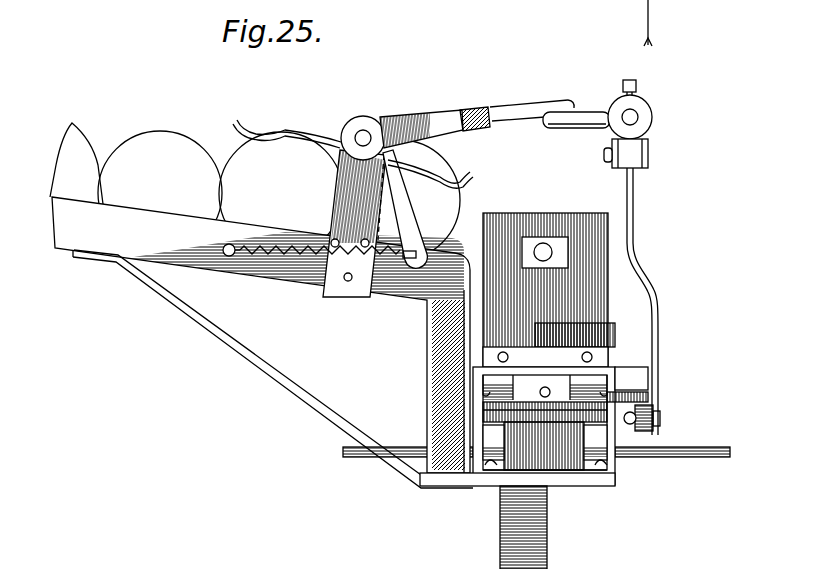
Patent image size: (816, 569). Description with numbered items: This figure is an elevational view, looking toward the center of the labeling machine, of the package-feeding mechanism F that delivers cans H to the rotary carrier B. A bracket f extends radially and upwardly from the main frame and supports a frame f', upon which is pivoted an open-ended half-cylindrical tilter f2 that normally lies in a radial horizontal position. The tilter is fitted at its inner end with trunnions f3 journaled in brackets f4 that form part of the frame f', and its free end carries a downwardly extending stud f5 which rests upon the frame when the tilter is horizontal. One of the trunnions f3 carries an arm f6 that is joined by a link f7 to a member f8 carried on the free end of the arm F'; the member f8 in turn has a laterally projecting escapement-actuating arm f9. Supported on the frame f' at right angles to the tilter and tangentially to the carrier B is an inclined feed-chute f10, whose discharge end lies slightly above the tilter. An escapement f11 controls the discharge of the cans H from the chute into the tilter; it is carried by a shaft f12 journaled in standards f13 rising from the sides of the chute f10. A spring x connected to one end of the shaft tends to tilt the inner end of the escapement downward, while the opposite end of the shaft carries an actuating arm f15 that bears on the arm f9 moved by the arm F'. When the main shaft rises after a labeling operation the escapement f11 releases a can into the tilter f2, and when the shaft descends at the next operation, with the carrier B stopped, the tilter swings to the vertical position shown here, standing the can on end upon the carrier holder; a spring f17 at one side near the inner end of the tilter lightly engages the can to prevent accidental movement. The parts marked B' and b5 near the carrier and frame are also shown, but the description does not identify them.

The rotary carrier B is at (544, 479).
The bed plate bracket B' is at (523, 493).
The base plate b5 is at (500, 468).
The cans H is at (246, 170).
The feed mechanism F is at (421, 111).
The arm F' is at (645, 95).
The bracket f is at (544, 459).
The frame f' is at (524, 499).
The tilter f2 is at (597, 240).
The trunnions f3 is at (640, 393).
The brackets f4 is at (478, 432).
The stud f5 is at (545, 251).
The arm f6 is at (650, 406).
The link f7 is at (634, 192).
The member f8 is at (652, 120).
The escapement-actuating arm f9 is at (583, 115).
The feed-chute f10 is at (160, 240).
The escapement f11 is at (283, 132).
The shaft f12 is at (363, 137).
The standards f13 is at (345, 287).
The actuating arm f15 is at (517, 97).
The spring f17 is at (390, 186).
The spring x is at (300, 252).